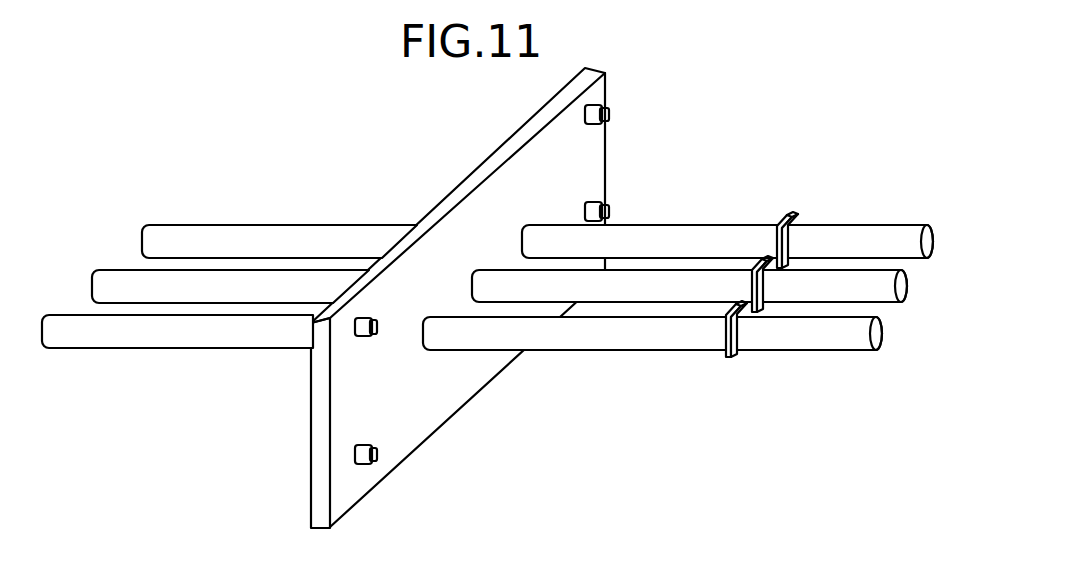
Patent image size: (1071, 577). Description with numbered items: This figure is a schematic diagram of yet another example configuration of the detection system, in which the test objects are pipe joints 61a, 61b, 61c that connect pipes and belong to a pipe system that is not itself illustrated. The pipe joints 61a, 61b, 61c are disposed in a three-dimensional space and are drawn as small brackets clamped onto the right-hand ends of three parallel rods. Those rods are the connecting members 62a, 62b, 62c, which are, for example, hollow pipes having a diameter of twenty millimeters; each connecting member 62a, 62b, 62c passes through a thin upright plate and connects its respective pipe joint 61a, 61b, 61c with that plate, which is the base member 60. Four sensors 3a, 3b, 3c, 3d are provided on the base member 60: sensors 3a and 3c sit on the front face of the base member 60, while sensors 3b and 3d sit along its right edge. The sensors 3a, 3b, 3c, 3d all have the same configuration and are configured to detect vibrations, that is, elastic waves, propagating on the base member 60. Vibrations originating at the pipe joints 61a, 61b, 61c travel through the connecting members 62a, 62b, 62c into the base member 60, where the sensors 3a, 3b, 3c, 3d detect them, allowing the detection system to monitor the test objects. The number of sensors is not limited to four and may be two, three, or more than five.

The sensor 3a is at (378, 327).
The sensor 3b is at (611, 116).
The sensor 3c is at (378, 457).
The sensor 3d is at (611, 213).
The base member 60 is at (318, 446).
The pipe joint 61a is at (729, 355).
The pipe joint 61b is at (772, 314).
The pipe joint 61c is at (774, 312).
The connecting member 62a is at (72, 314).
The connecting member 62b is at (120, 269).
The connecting member 62c is at (170, 224).